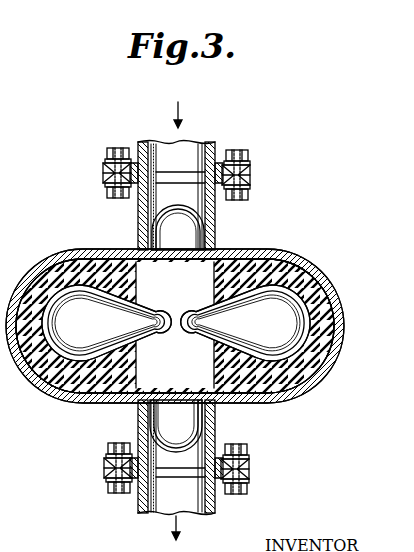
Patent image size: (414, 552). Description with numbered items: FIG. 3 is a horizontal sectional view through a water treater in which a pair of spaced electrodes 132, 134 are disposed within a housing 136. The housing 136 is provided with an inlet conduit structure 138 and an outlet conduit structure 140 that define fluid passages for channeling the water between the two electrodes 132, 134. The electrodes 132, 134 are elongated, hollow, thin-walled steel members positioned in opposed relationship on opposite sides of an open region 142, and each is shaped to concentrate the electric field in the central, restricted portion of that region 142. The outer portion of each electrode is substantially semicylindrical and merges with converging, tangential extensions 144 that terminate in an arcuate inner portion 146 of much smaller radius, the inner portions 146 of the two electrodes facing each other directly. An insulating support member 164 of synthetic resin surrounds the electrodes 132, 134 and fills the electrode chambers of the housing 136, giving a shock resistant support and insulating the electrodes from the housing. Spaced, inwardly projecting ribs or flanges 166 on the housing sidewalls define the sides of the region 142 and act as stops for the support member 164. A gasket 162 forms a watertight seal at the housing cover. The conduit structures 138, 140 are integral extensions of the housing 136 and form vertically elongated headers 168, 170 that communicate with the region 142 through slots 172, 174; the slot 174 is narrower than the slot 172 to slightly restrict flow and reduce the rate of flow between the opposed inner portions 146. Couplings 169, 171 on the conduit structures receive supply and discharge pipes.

The electrode 132 is at (40, 290).
The electrode 134 is at (294, 283).
The housing 136 is at (25, 392).
The inlet conduit structure 138 is at (215, 222).
The outlet conduit structure 140 is at (215, 435).
The open region 142 is at (146, 392).
The converging, tangential extensions 144 is at (220, 330).
The arcuate inner portion 146 is at (179, 318).
The gasket 162 is at (91, 118).
The insulating support member 164 is at (70, 272).
The ribs or flanges 166 is at (216, 265).
The header 168 is at (148, 220).
The coupling 169 is at (250, 165).
The header 170 is at (145, 424).
The coupling 171 is at (250, 486).
The slot 172 is at (178, 227).
The slot 174 is at (176, 426).